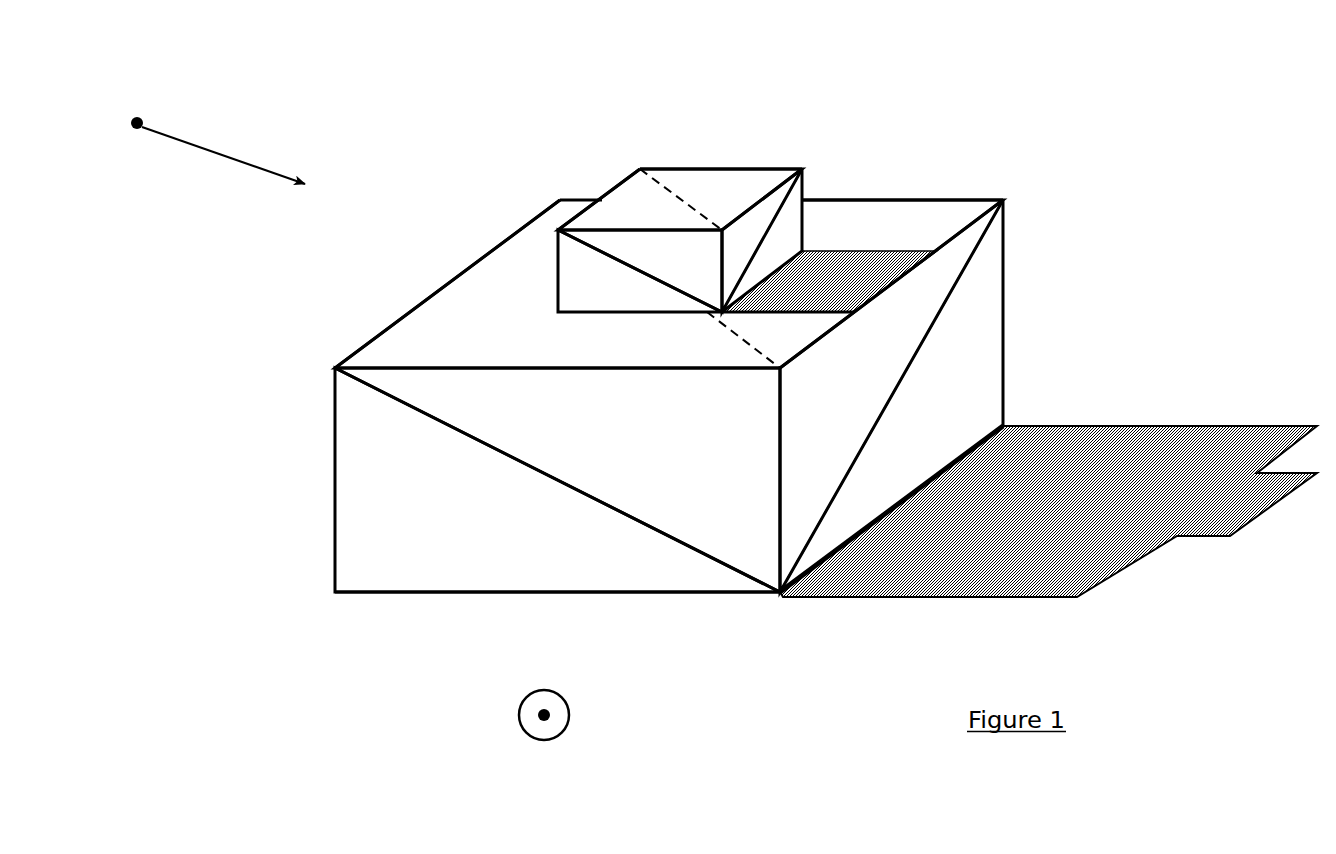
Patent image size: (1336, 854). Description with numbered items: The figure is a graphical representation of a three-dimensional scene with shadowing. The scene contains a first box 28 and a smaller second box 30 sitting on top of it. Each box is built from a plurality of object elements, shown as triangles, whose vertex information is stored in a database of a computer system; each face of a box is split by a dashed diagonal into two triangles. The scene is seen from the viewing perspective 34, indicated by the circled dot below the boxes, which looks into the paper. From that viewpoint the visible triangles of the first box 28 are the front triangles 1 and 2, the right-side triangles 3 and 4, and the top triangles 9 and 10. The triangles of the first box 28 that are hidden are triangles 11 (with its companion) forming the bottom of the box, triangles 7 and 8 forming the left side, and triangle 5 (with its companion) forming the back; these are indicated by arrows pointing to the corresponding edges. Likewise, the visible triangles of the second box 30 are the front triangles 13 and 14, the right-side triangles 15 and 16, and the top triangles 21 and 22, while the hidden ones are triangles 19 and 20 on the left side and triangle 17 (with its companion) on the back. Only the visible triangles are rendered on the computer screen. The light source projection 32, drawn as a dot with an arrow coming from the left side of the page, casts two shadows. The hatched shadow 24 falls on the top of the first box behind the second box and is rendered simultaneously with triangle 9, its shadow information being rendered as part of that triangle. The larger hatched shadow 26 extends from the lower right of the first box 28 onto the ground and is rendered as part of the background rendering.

The triangle 1 is at (557, 480).
The triangle 2 is at (557, 480).
The triangle 3 is at (891, 396).
The triangle 4 is at (891, 396).
The triangle 5 is at (902, 166).
The triangle 7 is at (440, 284).
The triangle 8 is at (385, 300).
The triangle 9 is at (781, 284).
The triangle 10 is at (557, 284).
The triangle 11 is at (557, 625).
The triangle 13 is at (640, 271).
The triangle 14 is at (640, 271).
The triangle 15 is at (762, 240).
The triangle 16 is at (762, 240).
The triangle 17 is at (723, 135).
The triangle 19 is at (568, 188).
The triangle 20 is at (551, 215).
The triangle 21 is at (640, 199).
The triangle 22 is at (721, 199).
The shadow 24 is at (833, 238).
The shadow 26 is at (1128, 410).
The first box 28 is at (756, 395).
The second box 30 is at (652, 197).
The light source projection 32 is at (185, 121).
The viewing perspective 34 is at (541, 764).